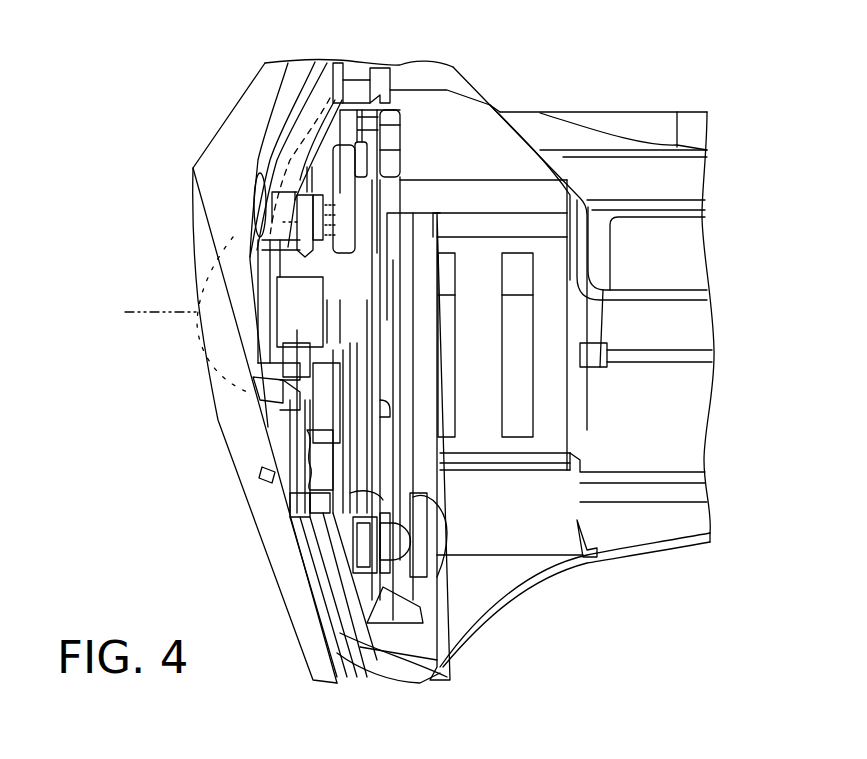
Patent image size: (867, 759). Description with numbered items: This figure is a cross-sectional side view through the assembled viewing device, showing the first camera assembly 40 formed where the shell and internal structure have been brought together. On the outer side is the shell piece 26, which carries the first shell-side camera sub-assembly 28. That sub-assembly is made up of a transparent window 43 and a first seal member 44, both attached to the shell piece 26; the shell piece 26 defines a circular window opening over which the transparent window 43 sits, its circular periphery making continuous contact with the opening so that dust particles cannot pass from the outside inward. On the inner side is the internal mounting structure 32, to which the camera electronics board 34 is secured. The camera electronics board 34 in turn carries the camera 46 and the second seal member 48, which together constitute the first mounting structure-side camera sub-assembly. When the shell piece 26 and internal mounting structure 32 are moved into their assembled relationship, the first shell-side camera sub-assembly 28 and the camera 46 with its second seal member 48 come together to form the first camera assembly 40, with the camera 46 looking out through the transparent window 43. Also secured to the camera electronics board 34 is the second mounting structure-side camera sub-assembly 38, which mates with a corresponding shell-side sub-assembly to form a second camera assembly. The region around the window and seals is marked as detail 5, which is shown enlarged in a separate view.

The detail 5 is at (149, 313).
The shell piece 26 is at (213, 192).
The first shell-side camera sub-assembly 28 is at (152, 391).
The internal mounting structure 32 is at (465, 147).
The camera electronics board 34 is at (305, 315).
The second mounting structure-side camera sub-assembly 38 is at (337, 113).
The first camera assembly 40 is at (121, 134).
The transparent window 43 is at (270, 323).
The first seal member 44 is at (263, 397).
The camera 46 is at (352, 305).
The second seal member 48 is at (247, 237).